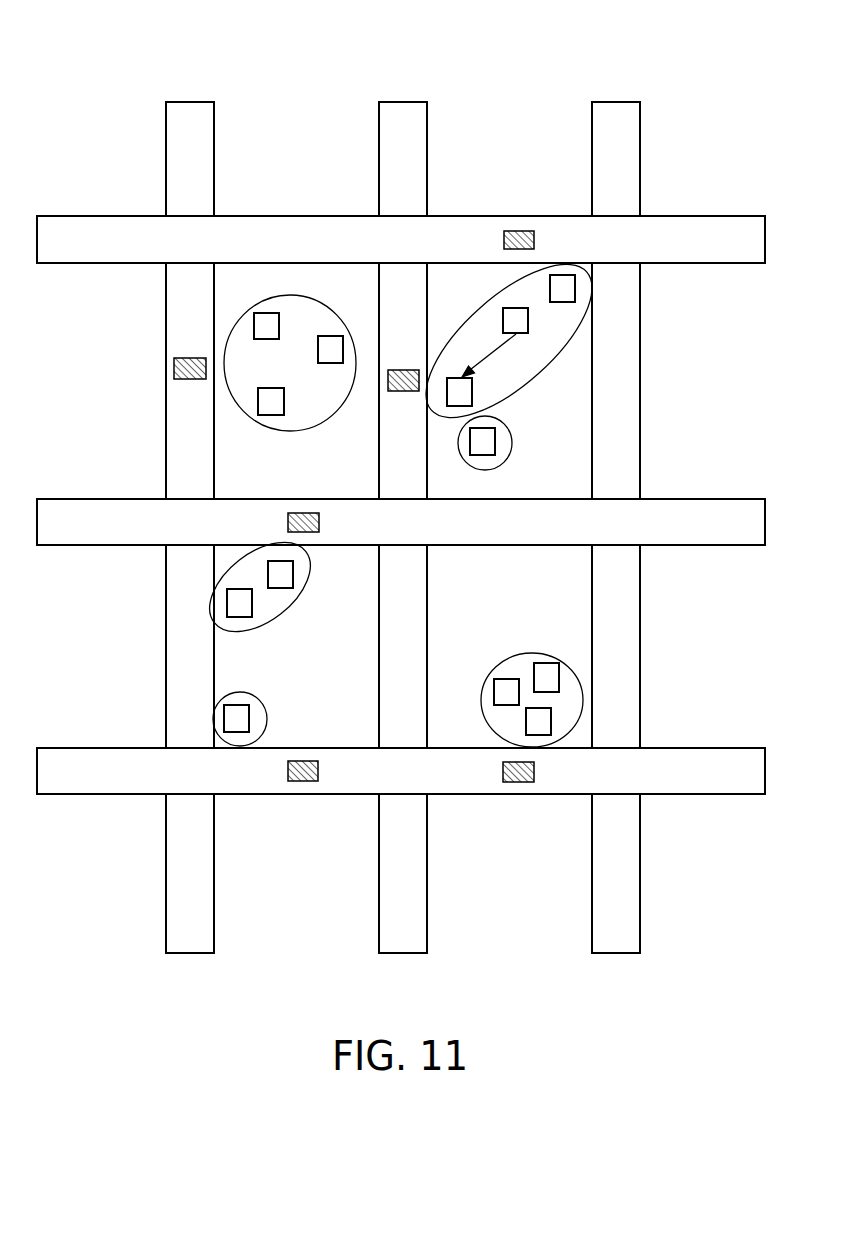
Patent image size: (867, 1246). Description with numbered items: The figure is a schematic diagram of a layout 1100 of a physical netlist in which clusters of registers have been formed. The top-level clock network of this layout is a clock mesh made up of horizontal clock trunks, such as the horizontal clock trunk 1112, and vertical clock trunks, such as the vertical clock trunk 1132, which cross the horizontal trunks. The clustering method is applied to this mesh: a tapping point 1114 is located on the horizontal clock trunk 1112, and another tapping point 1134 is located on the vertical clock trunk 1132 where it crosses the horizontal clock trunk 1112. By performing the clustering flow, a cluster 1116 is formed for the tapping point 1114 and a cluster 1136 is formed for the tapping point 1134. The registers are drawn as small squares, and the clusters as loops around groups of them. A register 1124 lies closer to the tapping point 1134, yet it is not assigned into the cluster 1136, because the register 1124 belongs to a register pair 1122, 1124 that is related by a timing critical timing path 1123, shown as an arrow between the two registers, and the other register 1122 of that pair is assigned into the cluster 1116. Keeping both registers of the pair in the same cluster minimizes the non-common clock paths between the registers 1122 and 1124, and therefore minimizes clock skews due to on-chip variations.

The layout 1100 is at (93, 29).
The horizontal clock trunk 1112 is at (733, 232).
The tapping point 1114 is at (519, 231).
The cluster 1116 is at (509, 284).
The register 1122 is at (504, 318).
The timing critical timing path 1123 is at (488, 357).
The register 1124 is at (472, 392).
The vertical clock trunk 1132 is at (401, 112).
The tapping point 1134 is at (403, 370).
The cluster 1136 is at (512, 437).